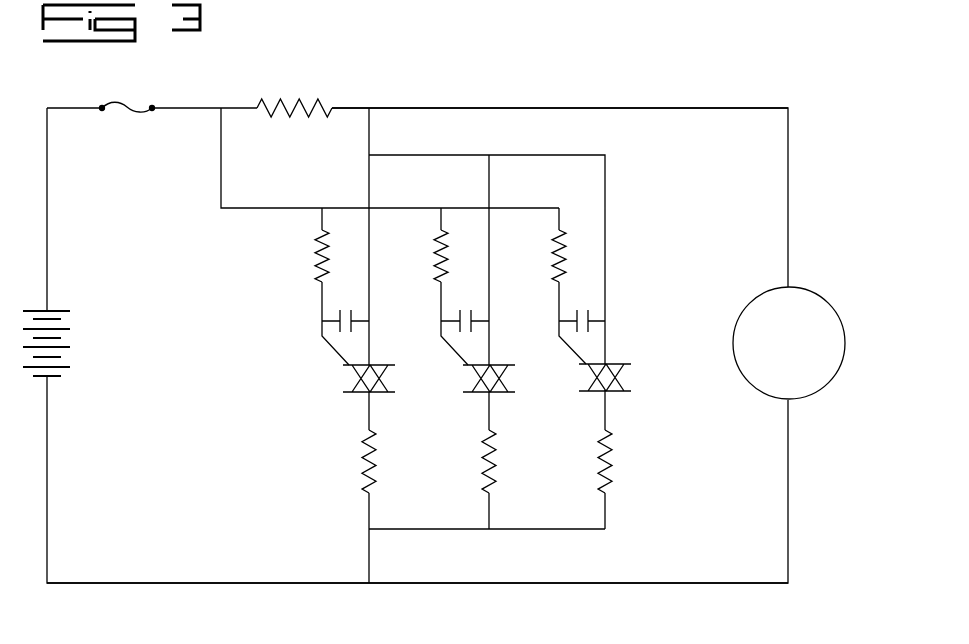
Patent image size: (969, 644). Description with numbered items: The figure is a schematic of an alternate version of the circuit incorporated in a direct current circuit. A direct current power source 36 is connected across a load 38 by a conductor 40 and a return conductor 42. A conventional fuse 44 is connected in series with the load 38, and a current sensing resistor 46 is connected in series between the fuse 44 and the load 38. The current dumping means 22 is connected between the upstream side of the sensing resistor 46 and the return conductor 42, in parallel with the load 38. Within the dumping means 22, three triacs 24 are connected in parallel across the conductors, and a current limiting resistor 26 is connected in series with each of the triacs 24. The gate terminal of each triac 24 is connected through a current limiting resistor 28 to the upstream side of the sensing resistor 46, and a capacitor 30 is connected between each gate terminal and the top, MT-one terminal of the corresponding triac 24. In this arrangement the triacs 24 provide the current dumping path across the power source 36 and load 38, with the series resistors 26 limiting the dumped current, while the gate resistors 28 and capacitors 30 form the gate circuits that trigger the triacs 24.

The current dumping means 22 is at (262, 359).
The triac 24 is at (352, 394).
The current limiting resistor 26 is at (363, 460).
The current limiting resistor 28 is at (320, 250).
The capacitor 30 is at (338, 318).
The direct current power source 36 is at (62, 310).
The load 38 is at (802, 288).
The conductor 40 is at (590, 106).
The return conductor 42 is at (628, 585).
The fuse 44 is at (121, 104).
The current sensing resistor 46 is at (306, 100).